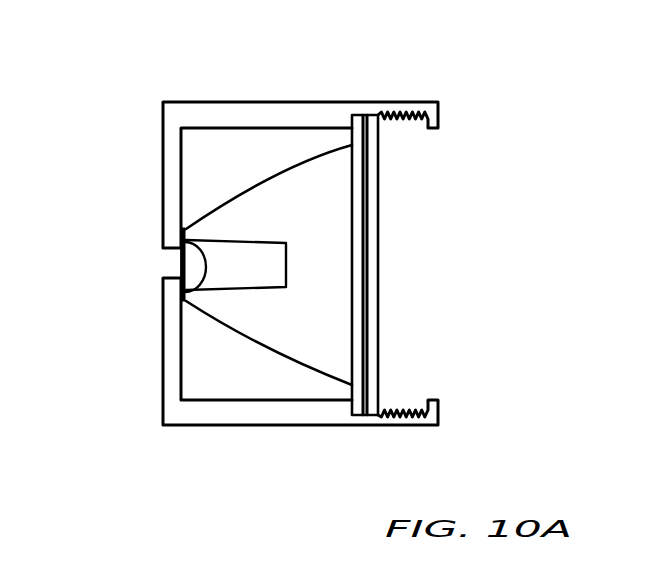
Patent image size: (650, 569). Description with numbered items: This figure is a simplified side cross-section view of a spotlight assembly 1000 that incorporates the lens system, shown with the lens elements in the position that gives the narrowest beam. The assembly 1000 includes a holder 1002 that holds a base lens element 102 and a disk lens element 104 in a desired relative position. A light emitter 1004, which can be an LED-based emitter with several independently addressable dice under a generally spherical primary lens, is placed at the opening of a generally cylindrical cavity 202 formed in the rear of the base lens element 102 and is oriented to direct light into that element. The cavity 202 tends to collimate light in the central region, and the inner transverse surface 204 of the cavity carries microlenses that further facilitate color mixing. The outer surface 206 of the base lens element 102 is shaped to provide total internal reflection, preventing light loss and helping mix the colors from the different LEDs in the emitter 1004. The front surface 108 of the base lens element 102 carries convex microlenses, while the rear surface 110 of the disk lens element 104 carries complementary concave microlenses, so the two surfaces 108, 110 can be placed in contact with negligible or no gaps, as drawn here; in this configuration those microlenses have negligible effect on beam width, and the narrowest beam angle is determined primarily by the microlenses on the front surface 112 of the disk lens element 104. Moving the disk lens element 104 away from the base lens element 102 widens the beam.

The spotlight assembly 1000 is at (102, 78).
The holder 1002 is at (238, 100).
The base lens element 102 is at (256, 192).
The light emitter 1004 is at (190, 268).
The cavity 202 is at (236, 265).
The inner transverse surface 204 is at (300, 267).
The outer surface 206 is at (282, 360).
The disk lens element 104 is at (378, 212).
The rear surface 110 is at (354, 213).
The front surface 108 is at (375, 312).
The front surface 112 is at (385, 367).